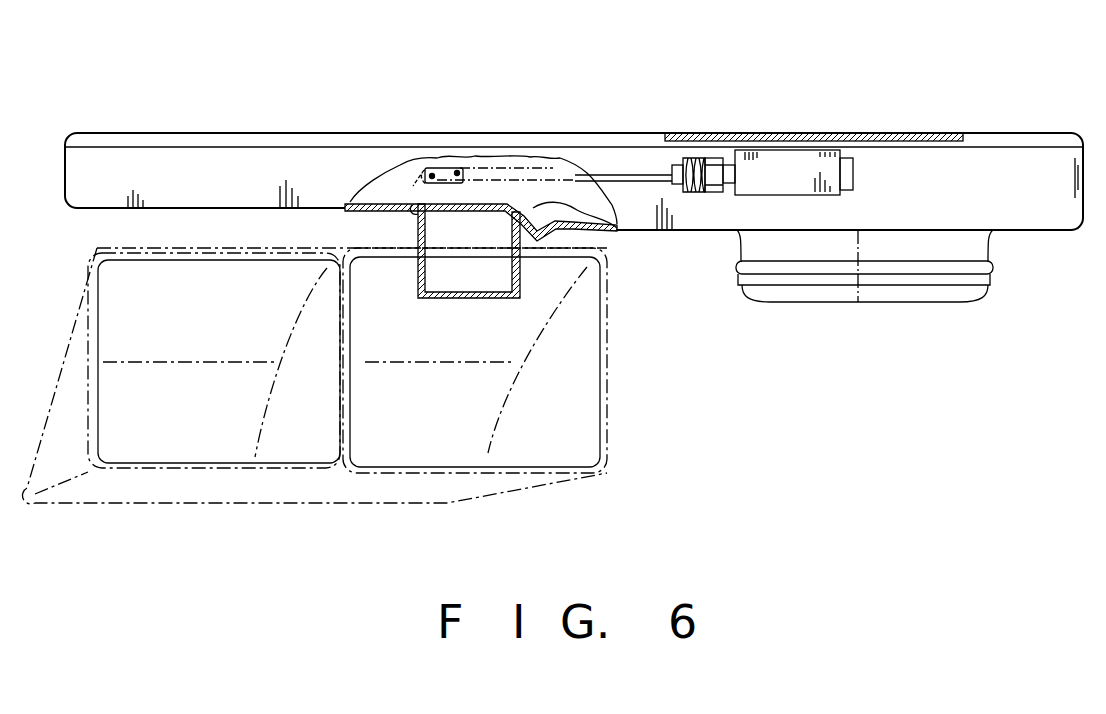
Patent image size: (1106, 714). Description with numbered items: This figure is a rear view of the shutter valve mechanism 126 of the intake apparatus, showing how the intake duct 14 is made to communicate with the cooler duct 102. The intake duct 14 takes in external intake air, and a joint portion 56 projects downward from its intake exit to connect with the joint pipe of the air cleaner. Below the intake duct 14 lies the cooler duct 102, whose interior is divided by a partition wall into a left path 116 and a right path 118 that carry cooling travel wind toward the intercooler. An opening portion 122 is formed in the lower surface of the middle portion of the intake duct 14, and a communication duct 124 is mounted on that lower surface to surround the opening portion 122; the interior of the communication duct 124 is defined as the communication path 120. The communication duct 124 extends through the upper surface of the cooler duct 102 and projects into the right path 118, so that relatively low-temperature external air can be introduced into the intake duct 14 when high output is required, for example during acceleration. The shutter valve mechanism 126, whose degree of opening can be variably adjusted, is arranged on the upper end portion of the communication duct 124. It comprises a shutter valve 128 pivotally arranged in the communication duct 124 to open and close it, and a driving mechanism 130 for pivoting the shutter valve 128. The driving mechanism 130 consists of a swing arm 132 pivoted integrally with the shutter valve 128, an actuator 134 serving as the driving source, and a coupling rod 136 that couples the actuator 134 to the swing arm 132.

The intake duct 14 is at (1010, 124).
The joint portion 56 is at (800, 301).
The cooler duct 102 is at (618, 442).
The left path 116 is at (207, 455).
The right path 118 is at (460, 453).
The communication path 120 is at (473, 283).
The opening portion 122 is at (530, 192).
The communication duct 124 is at (412, 272).
The shutter valve mechanism 126 is at (503, 118).
The shutter valve 128 is at (587, 231).
The driving mechanism 130 is at (762, 118).
The swing arm 132 is at (420, 182).
The actuator 134 is at (797, 160).
The coupling rod 136 is at (632, 173).